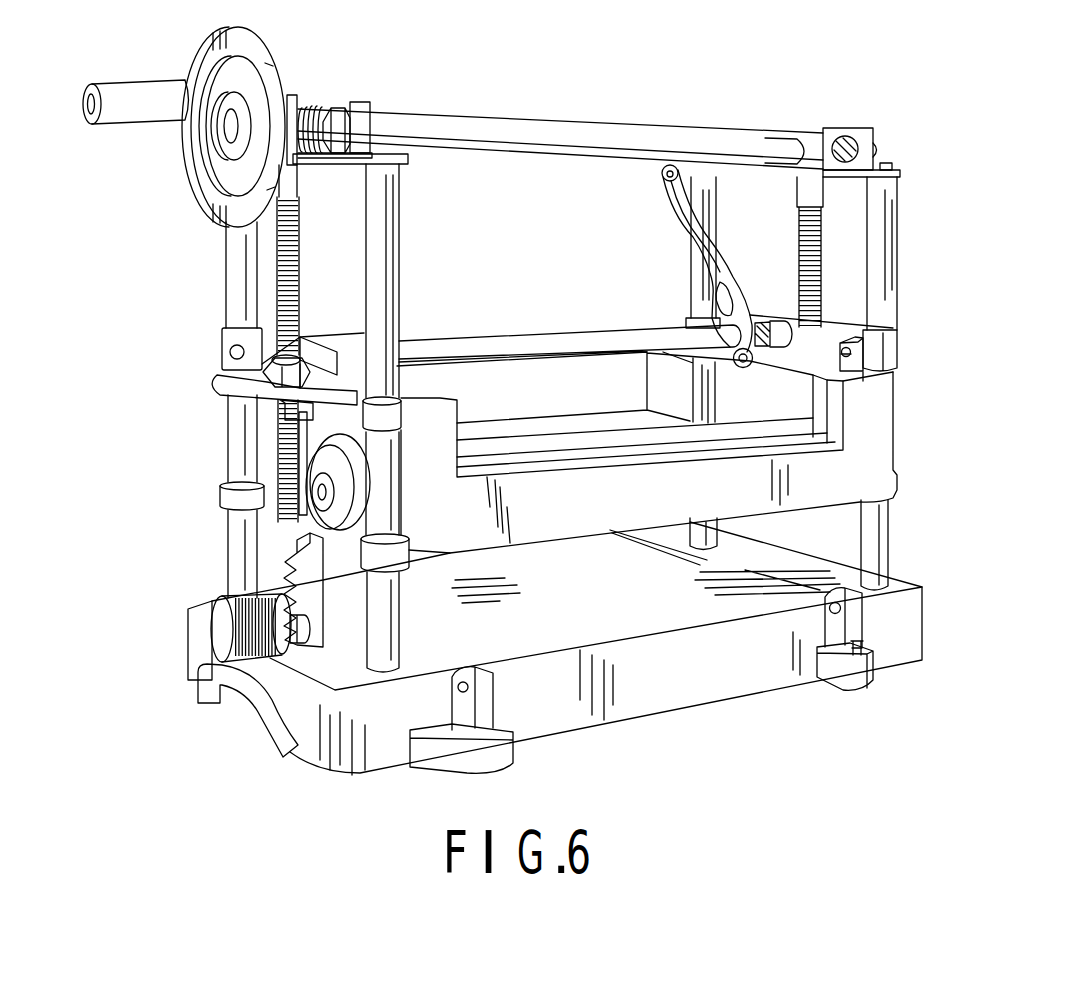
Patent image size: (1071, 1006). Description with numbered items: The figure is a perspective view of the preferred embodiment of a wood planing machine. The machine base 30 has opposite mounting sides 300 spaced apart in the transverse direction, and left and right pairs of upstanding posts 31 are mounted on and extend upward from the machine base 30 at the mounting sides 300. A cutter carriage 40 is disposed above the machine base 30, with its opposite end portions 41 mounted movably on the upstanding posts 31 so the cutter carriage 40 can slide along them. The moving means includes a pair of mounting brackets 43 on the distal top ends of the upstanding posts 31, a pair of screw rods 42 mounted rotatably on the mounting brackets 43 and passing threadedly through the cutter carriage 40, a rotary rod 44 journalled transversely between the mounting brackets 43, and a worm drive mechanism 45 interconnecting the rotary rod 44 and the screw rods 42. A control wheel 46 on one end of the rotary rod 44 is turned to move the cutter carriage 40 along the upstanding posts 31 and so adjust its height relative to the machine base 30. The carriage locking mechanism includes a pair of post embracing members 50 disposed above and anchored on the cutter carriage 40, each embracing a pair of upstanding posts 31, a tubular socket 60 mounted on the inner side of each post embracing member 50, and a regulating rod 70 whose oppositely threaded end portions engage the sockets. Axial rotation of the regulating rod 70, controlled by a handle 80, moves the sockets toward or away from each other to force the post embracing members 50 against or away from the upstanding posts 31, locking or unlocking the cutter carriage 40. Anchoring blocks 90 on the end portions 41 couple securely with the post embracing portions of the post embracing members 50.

The machine base 30 is at (925, 638).
The mounting sides 300 is at (336, 676).
The upstanding posts 31 is at (228, 562).
The cutter carriage 40 is at (898, 450).
The end portions 41 is at (221, 493).
The screw rods 42 is at (276, 278).
The mounting brackets 43 is at (860, 130).
The rotary rod 44 is at (531, 121).
The worm drive mechanism 45 is at (309, 104).
The control wheel 46 is at (152, 88).
The post embracing members 50 is at (220, 350).
The tubular socket 60 is at (771, 319).
The regulating rod 70 is at (493, 333).
The handle 80 is at (664, 195).
The anchoring blocks 90 is at (852, 334).